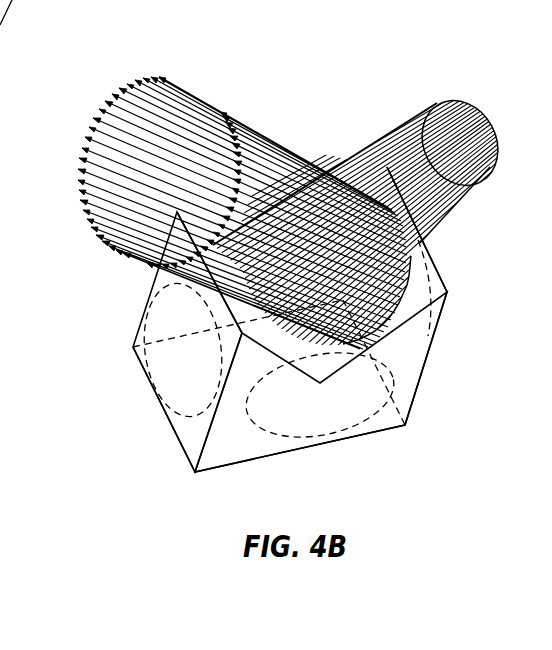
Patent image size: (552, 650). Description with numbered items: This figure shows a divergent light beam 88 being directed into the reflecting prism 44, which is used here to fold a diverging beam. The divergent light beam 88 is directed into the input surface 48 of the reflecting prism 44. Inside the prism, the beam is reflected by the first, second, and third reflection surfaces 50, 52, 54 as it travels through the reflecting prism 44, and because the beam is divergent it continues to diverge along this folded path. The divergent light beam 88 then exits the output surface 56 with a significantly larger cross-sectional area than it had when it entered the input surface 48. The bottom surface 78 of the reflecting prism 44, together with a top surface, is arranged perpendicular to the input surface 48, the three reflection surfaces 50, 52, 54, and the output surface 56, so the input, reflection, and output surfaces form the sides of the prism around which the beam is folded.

The reflecting prism 44 is at (283, 335).
The input surface 48 is at (255, 338).
The first reflection surface 50 is at (188, 432).
The second reflection surface 52 is at (347, 440).
The third reflection surface 54 is at (430, 352).
The output surface 56 is at (433, 281).
The bottom surface 78 is at (16, 1).
The divergent light beam 88 is at (293, 143).